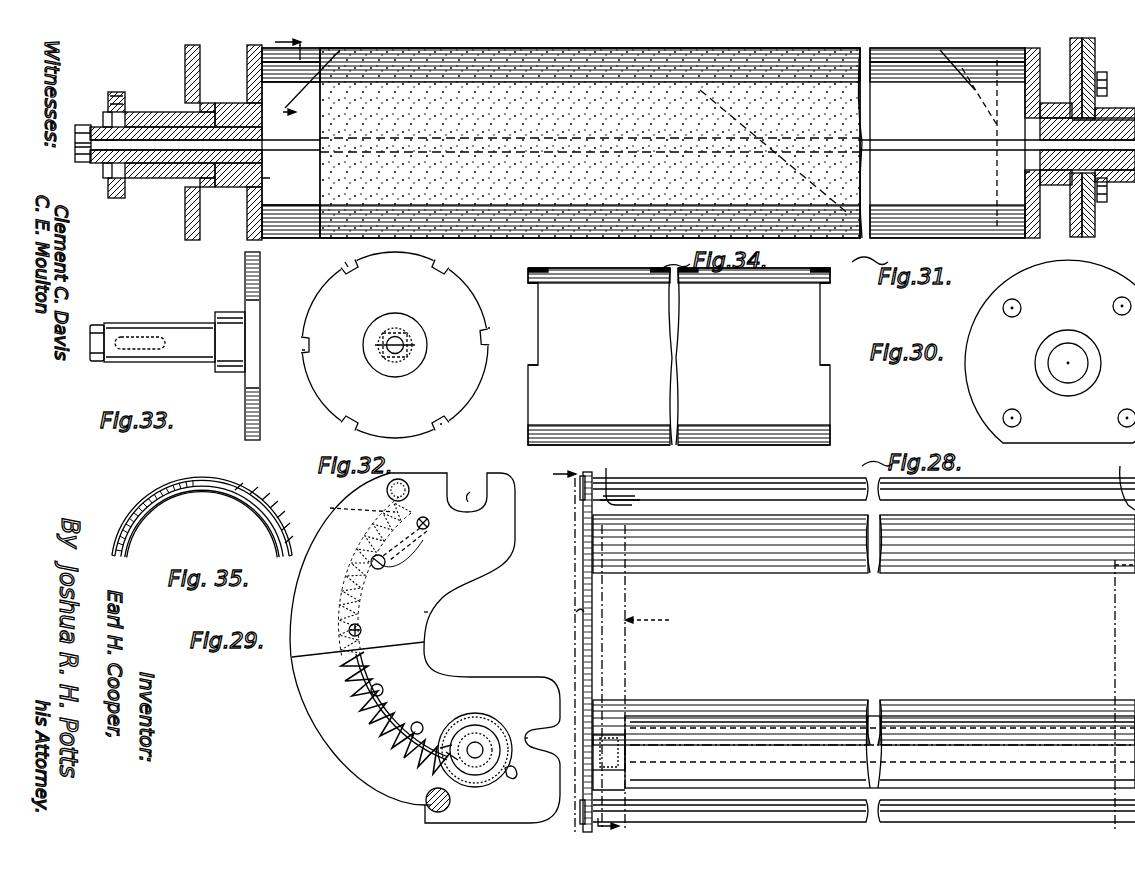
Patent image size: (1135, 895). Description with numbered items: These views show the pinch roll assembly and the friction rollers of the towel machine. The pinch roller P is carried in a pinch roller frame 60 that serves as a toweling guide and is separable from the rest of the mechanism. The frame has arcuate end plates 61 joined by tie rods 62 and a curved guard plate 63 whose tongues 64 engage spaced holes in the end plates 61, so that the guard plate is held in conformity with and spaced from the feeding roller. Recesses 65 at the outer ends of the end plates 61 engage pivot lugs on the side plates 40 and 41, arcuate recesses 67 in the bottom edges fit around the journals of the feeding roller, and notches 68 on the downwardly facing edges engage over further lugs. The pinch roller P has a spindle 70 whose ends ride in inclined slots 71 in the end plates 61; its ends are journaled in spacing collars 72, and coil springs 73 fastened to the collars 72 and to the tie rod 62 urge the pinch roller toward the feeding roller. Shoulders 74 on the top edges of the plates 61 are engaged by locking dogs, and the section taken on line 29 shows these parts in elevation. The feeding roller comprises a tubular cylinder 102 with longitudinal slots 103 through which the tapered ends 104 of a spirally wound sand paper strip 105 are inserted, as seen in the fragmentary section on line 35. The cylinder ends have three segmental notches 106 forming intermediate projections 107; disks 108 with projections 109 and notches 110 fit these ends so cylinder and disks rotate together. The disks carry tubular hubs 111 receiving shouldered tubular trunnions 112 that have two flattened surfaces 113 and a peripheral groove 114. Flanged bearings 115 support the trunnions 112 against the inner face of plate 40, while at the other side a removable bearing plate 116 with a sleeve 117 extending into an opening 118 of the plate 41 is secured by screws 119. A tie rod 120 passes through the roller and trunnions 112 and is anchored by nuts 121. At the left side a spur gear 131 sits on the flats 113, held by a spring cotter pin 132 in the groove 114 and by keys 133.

In FIG. 31, the section line 35— 35 is at (278, 76).
In FIG. 31, the side plate 40 is at (185, 230).
In FIG. 31, the side plate 41 is at (1078, 232).
In FIG. 31, the tubular cylinder 102 is at (262, 205).
In FIG. 34, the tubular cylinder 102 is at (679, 356).
In FIG. 35, the tubular cylinder 102 is at (137, 534).
In FIG. 31, the longitudinal slots 103 is at (262, 78).
In FIG. 34, the longitudinal slots 103 is at (605, 268).
In FIG. 35, the longitudinal slots 103 is at (202, 482).
In FIG. 31, the tapered ends 104 is at (318, 52).
In FIG. 35, the tapered ends 104 is at (150, 500).
In FIG. 31, the sand paper strip 105 is at (590, 143).
In FIG. 35, the sand paper strip 105 is at (147, 482).
In FIG. 34, the segmental notches 106 is at (536, 335).
In FIG. 34, the intermediate projections 107 is at (532, 284).
In FIG. 31, the disks 108 is at (262, 178).
In FIG. 33, the disks 108 is at (247, 410).
In FIG. 32, the disks 108 is at (395, 345).
In FIG. 33, the projections 109 is at (260, 298).
In FIG. 32, the projections 109 is at (488, 326).
In FIG. 31, the notches 110 is at (247, 63).
In FIG. 33, the notches 110 is at (260, 258).
In FIG. 32, the notches 110 is at (354, 264).
In FIG. 31, the tubular flanges or hubs 111 is at (232, 187).
In FIG. 33, the tubular flanges or hubs 111 is at (228, 372).
In FIG. 32, the tubular flanges or hubs 111 is at (393, 315).
In FIG. 31, the tubular trunnions 112 is at (178, 165).
In FIG. 33, the tubular trunnions 112 is at (180, 323).
In FIG. 32, the tubular trunnions 112 is at (410, 338).
In FIG. 31, the flattened surfaces 113 is at (100, 163).
In FIG. 33, the flattened surfaces 113 is at (133, 337).
In FIG. 32, the flattened surfaces 113 is at (375, 346).
In FIG. 33, the peripheral groove 114 is at (97, 362).
In FIG. 32, the peripheral groove 114 is at (420, 360).
In FIG. 31, the flanged bearings 115 is at (165, 112).
In FIG. 31, the bearing plate 116 is at (1094, 48).
In FIG. 30, the bearing plate 116 is at (969, 392).
In FIG. 31, the sleeve or hub 117 is at (1076, 195).
In FIG. 30, the sleeve or hub 117 is at (1058, 378).
In FIG. 31, the opening 118 is at (1068, 104).
In FIG. 31, the screws 119 is at (1105, 204).
In FIG. 31, the tie rod 120 is at (284, 140).
In FIG. 31, the nuts 121 is at (82, 163).
In FIG. 31, the spur gear or pinion 131 is at (116, 92).
In FIG. 31, the spring cotter pin 132 is at (106, 113).
In FIG. 31, the keys 133 is at (120, 92).
In FIG. 28, the section line 29— 29 is at (589, 651).
In FIG. 29, the pinch roller frame 60 is at (525, 541).
In FIG. 29, the arcuate end plates 61 is at (500, 560).
In FIG. 28, the arcuate end plates 61 is at (583, 660).
In FIG. 29, the tie rods 62 is at (386, 490).
In FIG. 28, the tie rods 62 is at (864, 650).
In FIG. 29, the guard plate 63 is at (368, 660).
In FIG. 28, the guard plate 63 is at (864, 672).
In FIG. 29, the tongues 64 is at (430, 527).
In FIG. 29, the recesses 65 is at (470, 492).
In FIG. 29, the arcuate recesses 67 is at (428, 612).
In FIG. 28, the arcuate recesses 67 is at (580, 610).
In FIG. 29, the notches 68 is at (540, 727).
In FIG. 29, the spindle 70 is at (484, 742).
In FIG. 29, the inclined slots 71 is at (508, 778).
In FIG. 28, the spacing collars 72 is at (608, 738).
In FIG. 29, the coil springs 73 is at (351, 503).
In FIG. 28, the coil springs 73 is at (635, 494).
In FIG. 29, the shoulders or notches 74 is at (425, 807).
In FIG. 28, the pinch roller P is at (880, 752).